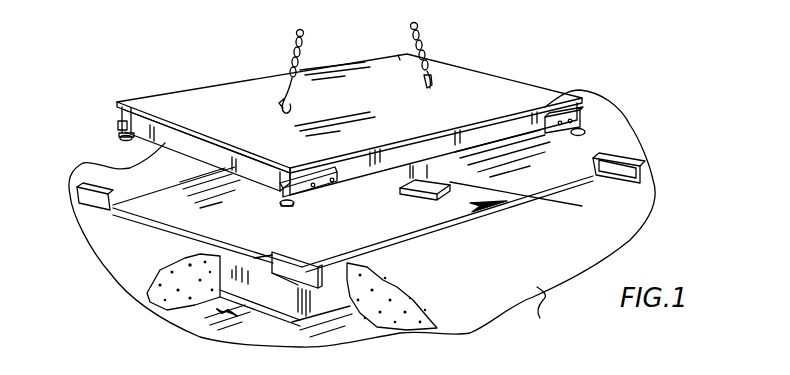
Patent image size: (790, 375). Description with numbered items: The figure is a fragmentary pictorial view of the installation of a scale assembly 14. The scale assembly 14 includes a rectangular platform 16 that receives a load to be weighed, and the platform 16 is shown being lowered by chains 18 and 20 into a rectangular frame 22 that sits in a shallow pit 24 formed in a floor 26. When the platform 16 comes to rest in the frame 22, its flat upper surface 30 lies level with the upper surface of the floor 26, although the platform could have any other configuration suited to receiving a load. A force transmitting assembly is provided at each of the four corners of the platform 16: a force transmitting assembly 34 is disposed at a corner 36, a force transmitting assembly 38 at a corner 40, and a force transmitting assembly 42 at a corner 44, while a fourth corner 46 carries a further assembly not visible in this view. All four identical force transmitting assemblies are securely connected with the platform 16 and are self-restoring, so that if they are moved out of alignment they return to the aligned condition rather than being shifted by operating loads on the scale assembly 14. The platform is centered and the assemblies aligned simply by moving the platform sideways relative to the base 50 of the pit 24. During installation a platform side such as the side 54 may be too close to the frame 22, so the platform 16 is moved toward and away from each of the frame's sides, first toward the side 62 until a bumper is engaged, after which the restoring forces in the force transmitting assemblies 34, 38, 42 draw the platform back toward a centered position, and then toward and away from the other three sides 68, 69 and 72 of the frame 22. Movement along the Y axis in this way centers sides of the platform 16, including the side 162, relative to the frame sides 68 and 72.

The scale assembly 14 is at (158, 58).
The platform 16 is at (527, 40).
The chain 18 is at (296, 36).
The chain 20 is at (420, 27).
The frame 22 is at (200, 334).
The pit 24 is at (535, 197).
The floor 26 is at (557, 304).
The upper surface 30 is at (220, 97).
The force transmitting assembly 34 is at (582, 118).
The corner 36 is at (547, 97).
The force transmitting assembly 38 is at (310, 197).
The corner 40 is at (338, 183).
The force transmitting assembly 42 is at (117, 135).
The corner 44 is at (153, 103).
The corner 46 is at (398, 58).
The base 50 is at (432, 223).
The side 54 is at (250, 163).
The side 62 is at (547, 173).
The side 68 is at (410, 327).
The side 69 is at (277, 298).
The side 72 is at (160, 205).
The side 162 is at (465, 110).